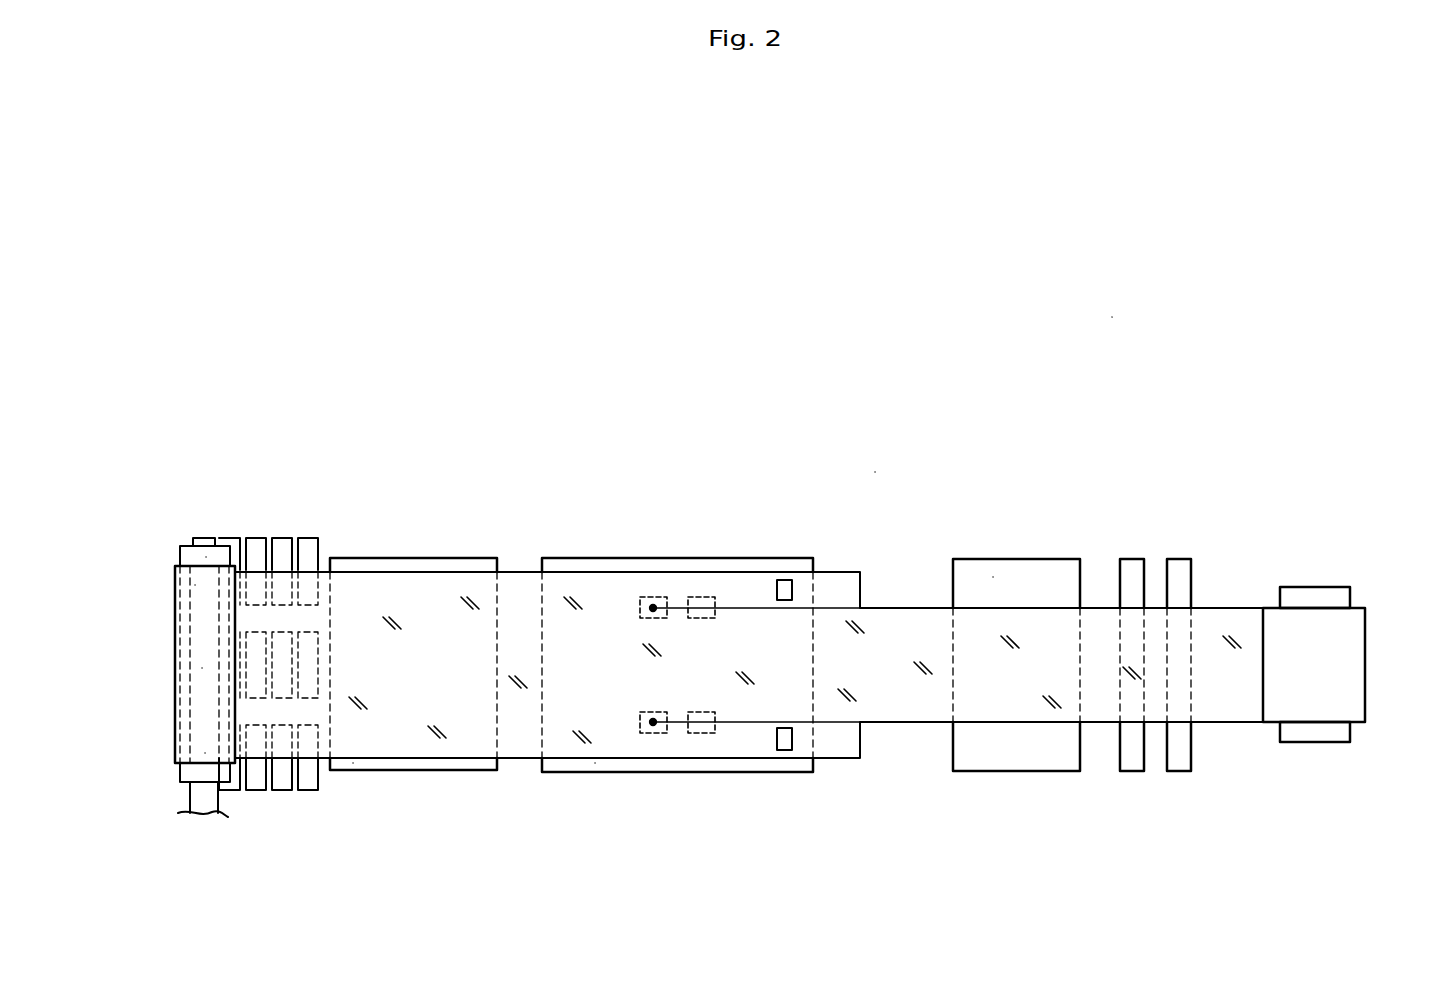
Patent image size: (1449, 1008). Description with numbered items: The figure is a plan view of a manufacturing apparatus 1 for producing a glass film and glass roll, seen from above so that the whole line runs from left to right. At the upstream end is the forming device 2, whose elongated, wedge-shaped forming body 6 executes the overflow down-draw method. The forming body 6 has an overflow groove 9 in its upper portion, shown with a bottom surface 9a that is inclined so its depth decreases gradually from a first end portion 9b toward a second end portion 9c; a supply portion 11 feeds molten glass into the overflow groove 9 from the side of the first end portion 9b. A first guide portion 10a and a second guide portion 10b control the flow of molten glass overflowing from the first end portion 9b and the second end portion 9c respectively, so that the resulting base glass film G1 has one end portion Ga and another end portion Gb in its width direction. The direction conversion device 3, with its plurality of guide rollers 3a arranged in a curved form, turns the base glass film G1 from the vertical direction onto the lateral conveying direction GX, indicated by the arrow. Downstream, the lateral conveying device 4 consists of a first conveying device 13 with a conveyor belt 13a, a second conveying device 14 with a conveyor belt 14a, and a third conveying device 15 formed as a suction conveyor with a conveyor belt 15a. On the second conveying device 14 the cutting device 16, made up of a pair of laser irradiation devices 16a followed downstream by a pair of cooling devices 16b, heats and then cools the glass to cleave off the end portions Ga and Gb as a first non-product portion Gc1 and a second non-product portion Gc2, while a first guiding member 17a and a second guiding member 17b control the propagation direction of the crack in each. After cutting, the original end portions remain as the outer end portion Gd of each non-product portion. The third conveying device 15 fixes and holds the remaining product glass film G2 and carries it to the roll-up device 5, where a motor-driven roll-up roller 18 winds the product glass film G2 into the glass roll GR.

The manufacturing apparatus 1 is at (1112, 317).
The forming device 2 is at (189, 663).
The direction conversion device 3 is at (270, 592).
The guide rollers 3a is at (307, 545).
The lateral conveying device 4 is at (875, 472).
The roll-up device 5 is at (1314, 626).
The forming body 6 is at (206, 557).
The overflow groove 9 is at (210, 595).
The bottom surface 9a is at (202, 668).
The first end portion 9b is at (205, 753).
The second end portion 9c is at (195, 583).
The first guide portion 10a is at (202, 767).
The second guide portion 10b is at (196, 556).
The supply portion 11 is at (212, 802).
The first conveying device 13 is at (413, 711).
The conveyor belt 13a is at (353, 763).
The second conveying device 14 is at (701, 685).
The conveyor belt 14a is at (595, 763).
The third conveying device 15 is at (1022, 625).
The conveyor belt 15a is at (993, 577).
The cutting device 16 is at (740, 669).
The laser irradiation devices 16a is at (647, 597).
The cooling devices 16b is at (695, 597).
The first guiding member 17a is at (785, 750).
The second guiding member 17b is at (786, 580).
The roll-up roller 18 is at (1318, 735).
The lateral conveying direction GX is at (855, 362).
The one end portion Ga is at (483, 750).
The another end portion Gb is at (520, 582).
The first non-product portion Gc1 is at (838, 745).
The second non-product portion Gc2 is at (836, 584).
The outer end portion Gd is at (757, 572).
The base glass film G1 is at (518, 750).
The product glass film G2 is at (902, 620).
The glass roll GR is at (1367, 668).